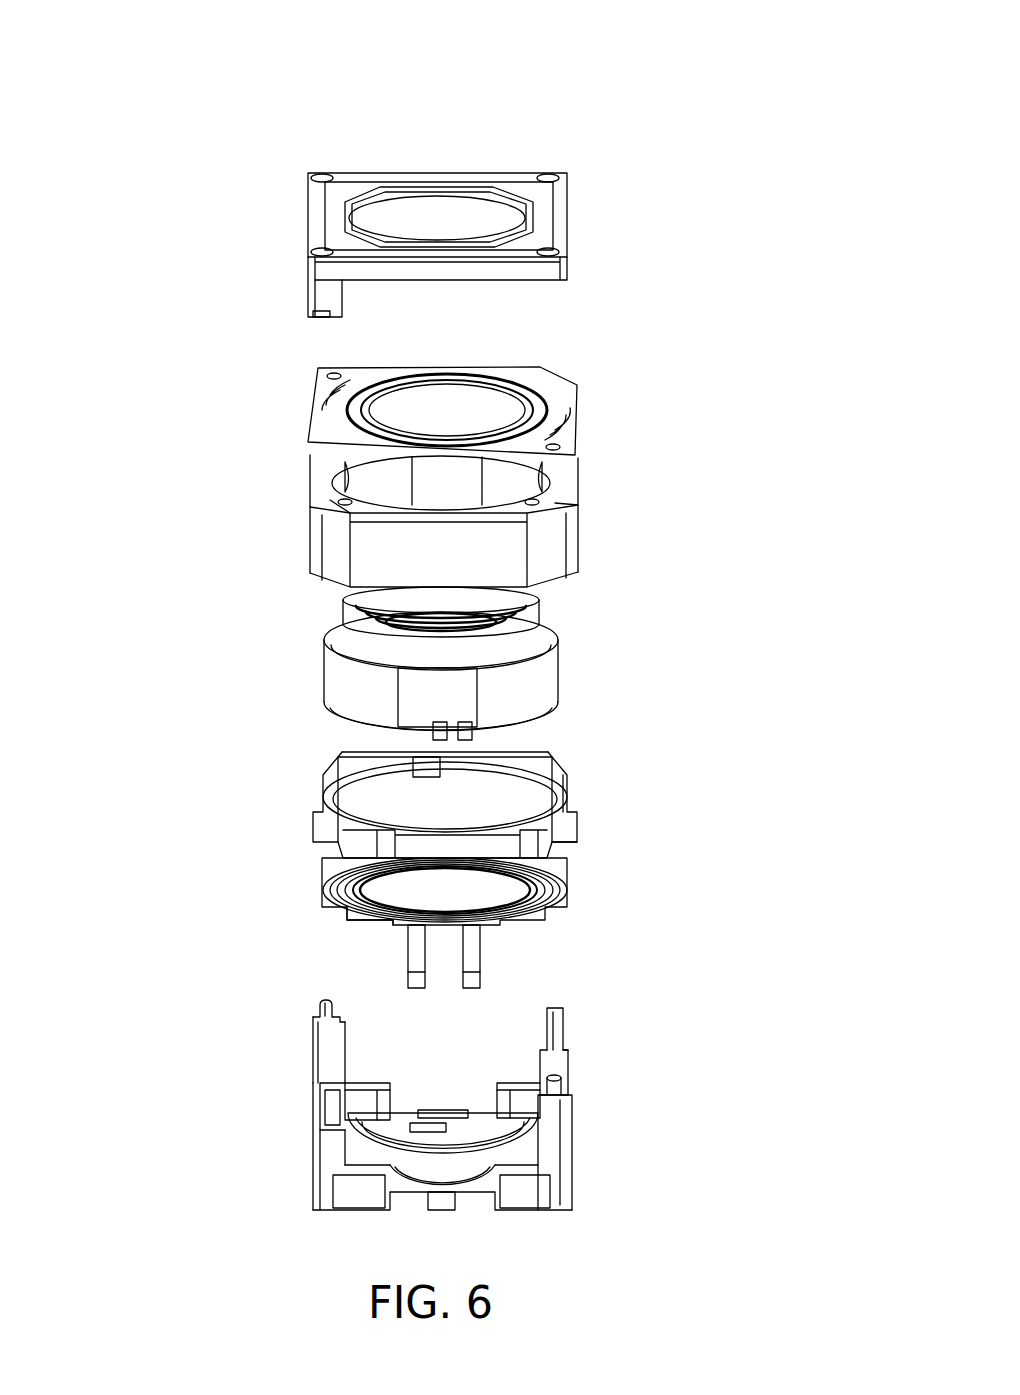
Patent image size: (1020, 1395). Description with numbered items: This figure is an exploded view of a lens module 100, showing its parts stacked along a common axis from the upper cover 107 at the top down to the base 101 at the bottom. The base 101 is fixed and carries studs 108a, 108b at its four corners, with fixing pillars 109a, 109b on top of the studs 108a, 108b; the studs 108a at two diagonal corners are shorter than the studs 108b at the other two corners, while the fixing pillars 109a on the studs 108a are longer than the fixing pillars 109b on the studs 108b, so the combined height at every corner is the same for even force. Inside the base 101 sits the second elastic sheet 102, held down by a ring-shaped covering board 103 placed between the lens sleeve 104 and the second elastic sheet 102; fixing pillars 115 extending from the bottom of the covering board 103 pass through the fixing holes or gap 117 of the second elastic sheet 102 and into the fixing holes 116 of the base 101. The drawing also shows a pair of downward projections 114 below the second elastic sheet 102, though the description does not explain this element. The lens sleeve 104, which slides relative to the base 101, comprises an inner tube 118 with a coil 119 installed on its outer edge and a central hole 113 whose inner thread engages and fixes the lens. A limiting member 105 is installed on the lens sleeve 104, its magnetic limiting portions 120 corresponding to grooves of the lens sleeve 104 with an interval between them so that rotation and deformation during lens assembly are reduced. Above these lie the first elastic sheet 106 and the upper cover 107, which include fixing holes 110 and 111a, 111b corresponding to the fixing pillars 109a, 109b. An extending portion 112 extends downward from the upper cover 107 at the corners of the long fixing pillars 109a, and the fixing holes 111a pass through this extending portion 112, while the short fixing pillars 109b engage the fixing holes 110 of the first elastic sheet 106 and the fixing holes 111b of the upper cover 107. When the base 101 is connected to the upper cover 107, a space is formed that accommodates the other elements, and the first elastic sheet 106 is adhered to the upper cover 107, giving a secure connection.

The lens module 100 is at (506, 127).
The base 101 is at (414, 1200).
The second elastic sheet 102 is at (320, 892).
The covering board 103 is at (313, 787).
The lens sleeve 104 is at (322, 596).
The limiting member 105 is at (310, 518).
The first elastic sheet 106 is at (318, 410).
The upper cover 107 is at (308, 222).
The studs 108a is at (328, 1158).
The studs 108b is at (330, 1065).
The fixing pillars 109a is at (557, 1028).
The fixing pillars 109b is at (318, 1010).
The fixing holes 110 is at (563, 447).
The fixing holes 111a is at (322, 257).
The fixing holes 111b is at (315, 172).
The extending portion 112 is at (325, 293).
The central hole 113 is at (545, 592).
The terminal pins 114 is at (473, 960).
The fixing pillars 115 is at (540, 858).
The fixing holes 116 is at (362, 1120).
The fixing holes or gap 117 is at (358, 920).
The inner tube 118 is at (357, 636).
The coil 119 is at (515, 685).
The magnetic limiting portions 120 is at (377, 473).